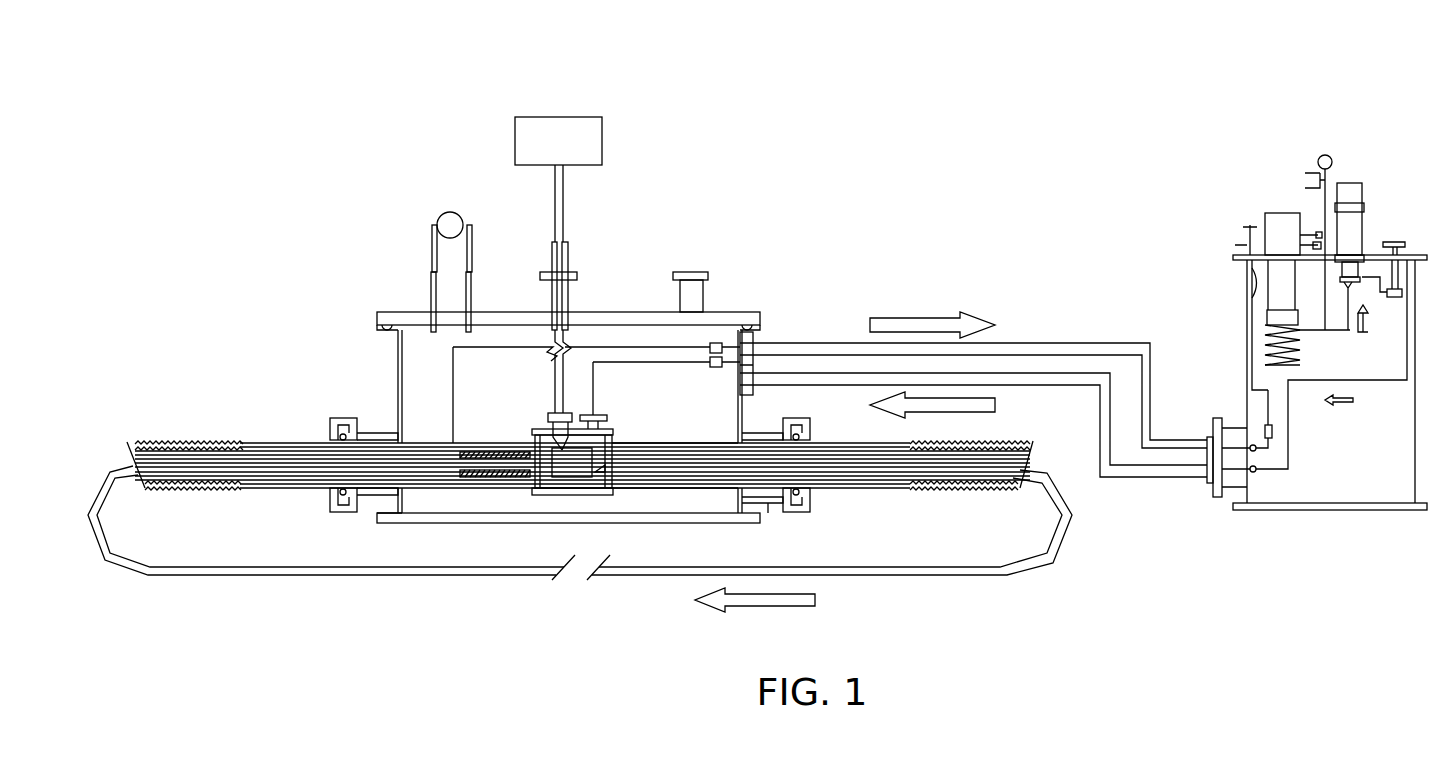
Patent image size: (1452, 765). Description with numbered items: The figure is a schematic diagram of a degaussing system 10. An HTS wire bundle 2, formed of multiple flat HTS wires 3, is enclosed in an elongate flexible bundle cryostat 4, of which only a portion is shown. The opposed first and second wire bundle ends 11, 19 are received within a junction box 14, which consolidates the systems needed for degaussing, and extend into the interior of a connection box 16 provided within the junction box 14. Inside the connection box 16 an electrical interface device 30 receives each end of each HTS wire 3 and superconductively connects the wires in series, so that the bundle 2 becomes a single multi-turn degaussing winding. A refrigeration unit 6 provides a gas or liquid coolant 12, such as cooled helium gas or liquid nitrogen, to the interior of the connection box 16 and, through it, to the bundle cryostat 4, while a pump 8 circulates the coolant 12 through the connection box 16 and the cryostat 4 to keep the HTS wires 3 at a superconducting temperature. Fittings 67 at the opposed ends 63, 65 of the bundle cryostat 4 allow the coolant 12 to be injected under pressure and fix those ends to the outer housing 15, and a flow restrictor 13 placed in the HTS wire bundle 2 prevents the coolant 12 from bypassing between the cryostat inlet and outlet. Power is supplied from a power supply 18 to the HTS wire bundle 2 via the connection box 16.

The degaussing system 10 is at (456, 86).
The power supply 18 is at (578, 125).
The outer housing 15 is at (616, 308).
The junction box 14 is at (405, 363).
The first end of the bundle cryostat 63 is at (498, 441).
The HTS wire 3 is at (866, 454).
The bundle cryostat 4 is at (940, 490).
The second end of the bundle cryostat 65 is at (665, 490).
The fittings 67 is at (365, 495).
The first wire bundle end 11 is at (545, 478).
The electrical interface device 30 is at (579, 478).
The second wire bundle end 19 is at (598, 478).
The connection box 16 is at (610, 442).
The flow restrictor 13 is at (475, 475).
The HTS wire bundle 2 is at (958, 570).
The coolant 12 is at (1029, 344).
The refrigeration unit 6 is at (1280, 214).
The pump 8 is at (1350, 184).